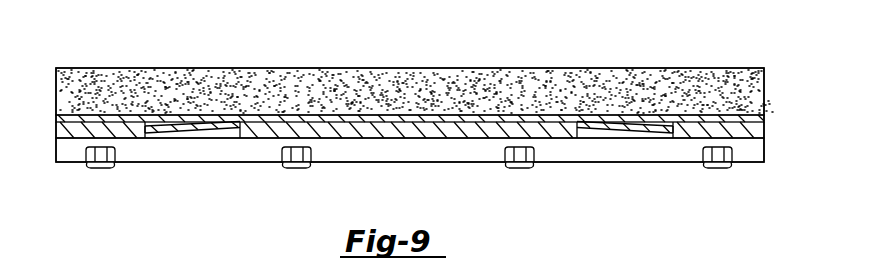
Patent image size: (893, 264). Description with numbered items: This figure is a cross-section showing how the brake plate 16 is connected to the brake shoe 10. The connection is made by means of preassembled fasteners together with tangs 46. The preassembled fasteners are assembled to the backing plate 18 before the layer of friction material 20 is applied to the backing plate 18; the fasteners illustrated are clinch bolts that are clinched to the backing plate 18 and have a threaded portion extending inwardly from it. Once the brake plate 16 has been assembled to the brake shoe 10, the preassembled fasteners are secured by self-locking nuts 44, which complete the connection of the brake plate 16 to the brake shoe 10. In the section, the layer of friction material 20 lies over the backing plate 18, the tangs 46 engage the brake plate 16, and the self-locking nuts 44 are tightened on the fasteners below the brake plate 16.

The brake shoe 10 is at (764, 147).
The brake plate 16 is at (775, 82).
The backing plate 18 is at (764, 118).
The layer of friction material 20 is at (598, 80).
The self-locking nuts 44 is at (102, 168).
The tangs 46 is at (165, 121).